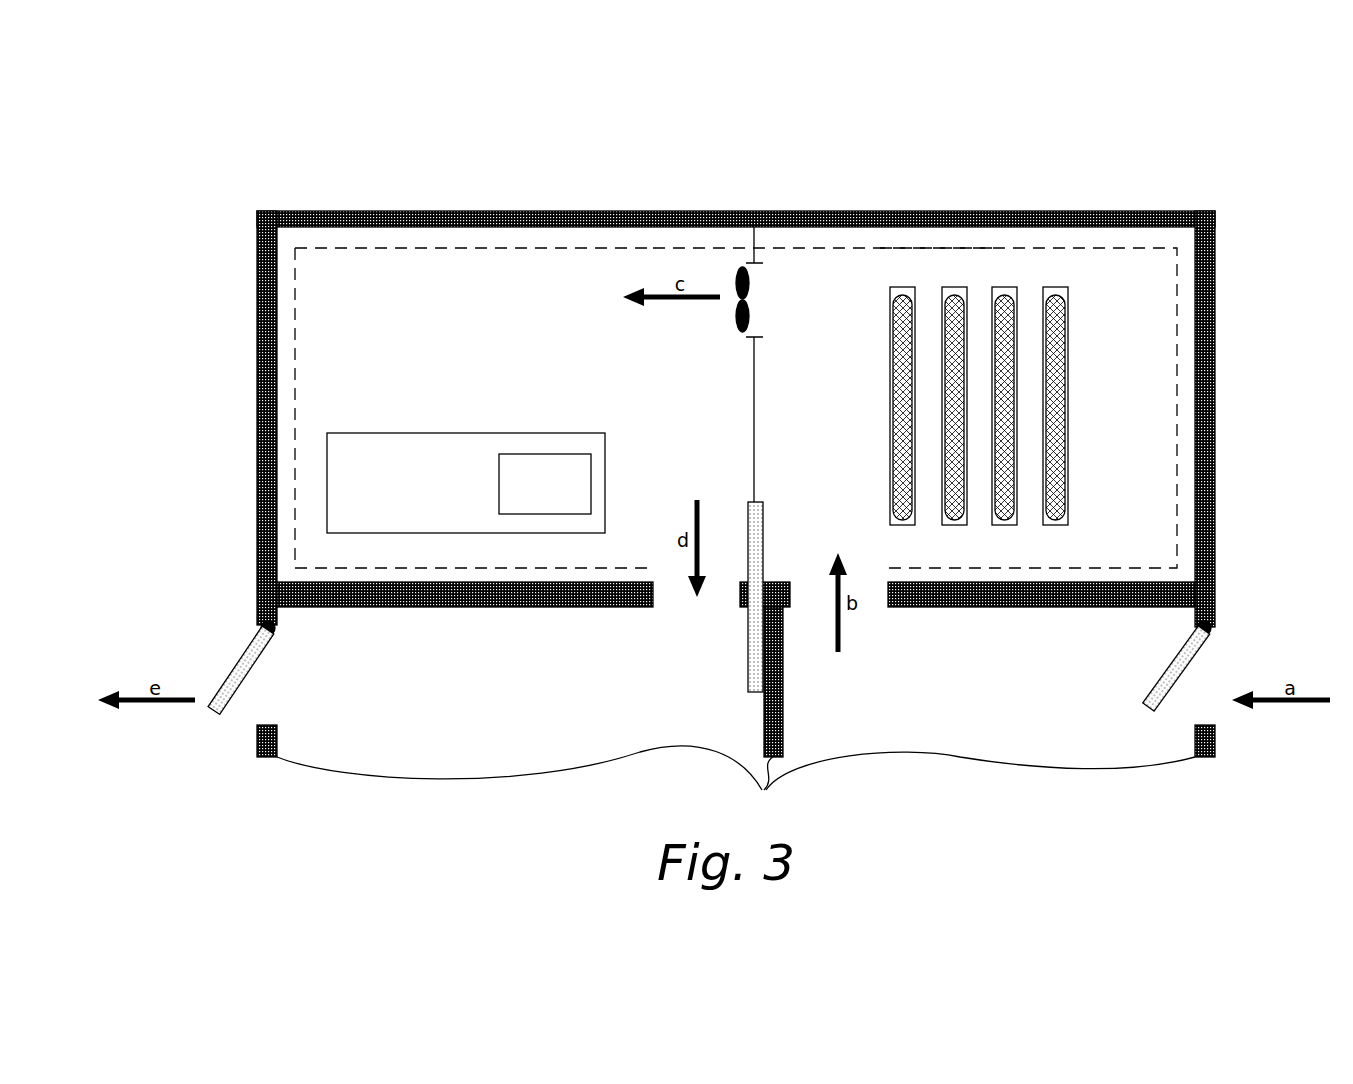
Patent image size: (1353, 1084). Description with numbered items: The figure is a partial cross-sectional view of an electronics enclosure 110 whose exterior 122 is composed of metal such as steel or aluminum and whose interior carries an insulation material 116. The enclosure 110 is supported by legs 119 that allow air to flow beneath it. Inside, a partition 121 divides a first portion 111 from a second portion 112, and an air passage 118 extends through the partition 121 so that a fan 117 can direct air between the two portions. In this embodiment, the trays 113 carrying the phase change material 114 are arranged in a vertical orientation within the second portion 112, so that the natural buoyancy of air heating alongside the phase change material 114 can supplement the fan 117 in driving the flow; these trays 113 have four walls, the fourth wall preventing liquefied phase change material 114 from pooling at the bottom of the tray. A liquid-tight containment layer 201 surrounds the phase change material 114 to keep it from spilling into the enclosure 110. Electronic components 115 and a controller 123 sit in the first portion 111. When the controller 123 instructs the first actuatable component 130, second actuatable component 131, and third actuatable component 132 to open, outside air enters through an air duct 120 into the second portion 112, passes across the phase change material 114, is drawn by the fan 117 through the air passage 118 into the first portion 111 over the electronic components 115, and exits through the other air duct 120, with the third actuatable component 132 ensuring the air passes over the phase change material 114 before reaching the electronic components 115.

The electronics enclosure 110 is at (452, 182).
The first portion 111 is at (326, 270).
The second portion 112 is at (1150, 264).
The trays 113 is at (903, 287).
The phase change material 114 is at (1070, 404).
The electronic components 115 is at (462, 433).
The insulation material 116 is at (907, 250).
The fan 117 is at (740, 268).
The air passage 118 is at (782, 547).
The legs 119 is at (736, 699).
The air duct 120 is at (308, 615).
The partition 121 is at (753, 425).
The exterior 122 is at (258, 408).
The controller 123 is at (548, 454).
The first actuatable component 130 is at (243, 668).
The second actuatable component 131 is at (1170, 665).
The third actuatable component 132 is at (763, 505).
The liquid-tight containment layer 201 is at (1060, 293).